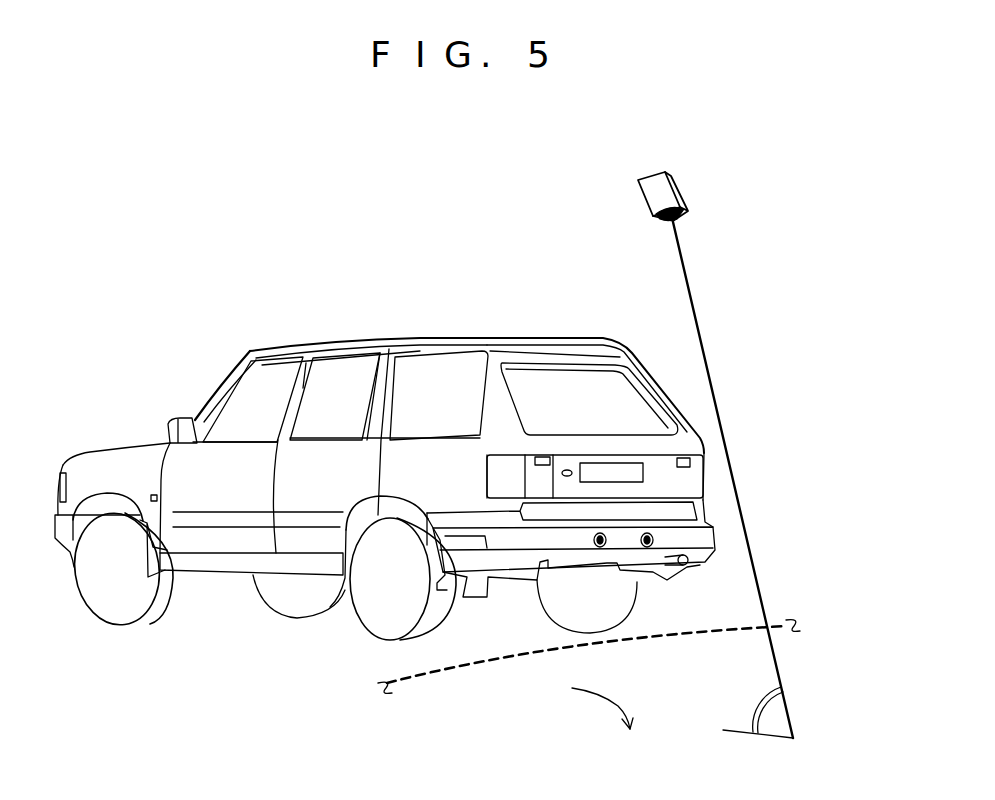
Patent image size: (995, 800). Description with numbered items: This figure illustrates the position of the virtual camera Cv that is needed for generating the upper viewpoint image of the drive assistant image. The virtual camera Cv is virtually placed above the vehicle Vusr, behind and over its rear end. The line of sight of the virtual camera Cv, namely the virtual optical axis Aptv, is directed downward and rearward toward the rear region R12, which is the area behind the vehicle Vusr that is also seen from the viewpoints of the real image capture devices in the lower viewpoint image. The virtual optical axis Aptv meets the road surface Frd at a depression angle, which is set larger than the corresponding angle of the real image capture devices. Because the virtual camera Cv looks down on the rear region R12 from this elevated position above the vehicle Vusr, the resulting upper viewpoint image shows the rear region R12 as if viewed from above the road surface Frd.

The vehicle Vusr is at (453, 305).
The virtual camera Cv is at (680, 176).
The virtual optical axis Aptv is at (750, 553).
The rear region R12 is at (385, 683).
The road surface Frd is at (574, 703).